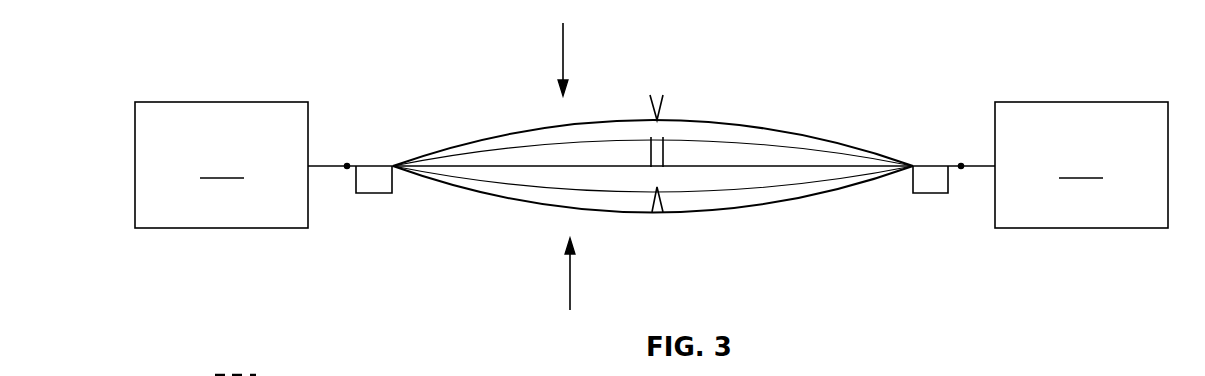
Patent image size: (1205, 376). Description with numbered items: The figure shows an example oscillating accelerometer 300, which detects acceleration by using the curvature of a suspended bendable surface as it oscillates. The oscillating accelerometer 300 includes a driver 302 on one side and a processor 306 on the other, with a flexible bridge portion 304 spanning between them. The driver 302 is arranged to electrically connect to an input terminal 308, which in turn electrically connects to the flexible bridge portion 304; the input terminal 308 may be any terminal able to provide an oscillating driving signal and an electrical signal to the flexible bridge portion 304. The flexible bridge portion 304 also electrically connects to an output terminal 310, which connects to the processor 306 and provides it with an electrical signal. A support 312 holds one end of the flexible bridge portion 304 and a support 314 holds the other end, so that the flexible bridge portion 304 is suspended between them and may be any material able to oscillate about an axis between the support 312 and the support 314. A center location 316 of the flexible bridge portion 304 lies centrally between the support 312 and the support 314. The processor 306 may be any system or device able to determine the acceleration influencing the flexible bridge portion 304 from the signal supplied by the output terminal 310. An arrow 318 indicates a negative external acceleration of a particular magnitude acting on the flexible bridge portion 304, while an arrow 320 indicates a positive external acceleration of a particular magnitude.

The oscillating accelerometer 300 is at (308, 71).
The driver 302 is at (221, 165).
The flexible bridge portion 304 is at (747, 127).
The processor 306 is at (1081, 165).
The input terminal 308 is at (347, 164).
The output terminal 310 is at (961, 164).
The support 312 is at (373, 183).
The support 314 is at (930, 183).
The center location 316 is at (688, 120).
The arrow 318 is at (563, 50).
The arrow 320 is at (570, 280).